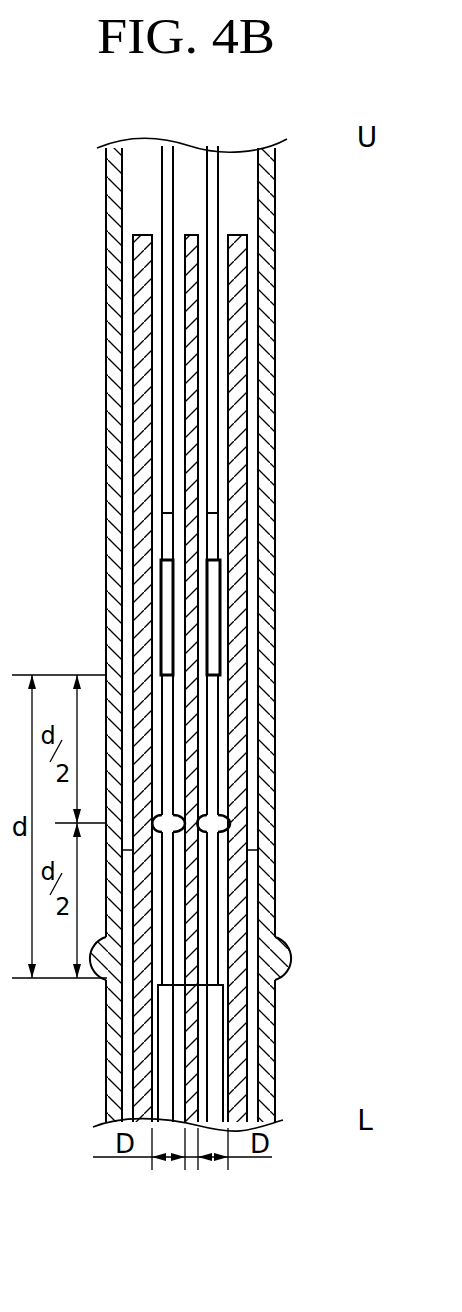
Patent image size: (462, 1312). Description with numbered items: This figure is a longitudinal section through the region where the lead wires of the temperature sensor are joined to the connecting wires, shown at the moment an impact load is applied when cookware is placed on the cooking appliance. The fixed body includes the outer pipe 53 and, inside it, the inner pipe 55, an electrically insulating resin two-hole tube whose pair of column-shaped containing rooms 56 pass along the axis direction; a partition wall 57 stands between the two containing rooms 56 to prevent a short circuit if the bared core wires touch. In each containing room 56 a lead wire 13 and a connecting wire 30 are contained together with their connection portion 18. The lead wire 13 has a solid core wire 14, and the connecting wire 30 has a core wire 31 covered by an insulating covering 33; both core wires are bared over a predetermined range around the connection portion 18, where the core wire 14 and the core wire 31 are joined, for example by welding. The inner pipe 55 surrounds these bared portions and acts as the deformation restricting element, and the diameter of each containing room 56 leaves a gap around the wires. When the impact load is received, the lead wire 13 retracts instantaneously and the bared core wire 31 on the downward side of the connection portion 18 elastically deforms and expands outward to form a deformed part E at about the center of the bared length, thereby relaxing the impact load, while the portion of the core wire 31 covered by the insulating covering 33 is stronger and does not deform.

The lead wire 13 is at (220, 182).
The core wire 14 is at (220, 527).
The connection portion 18 is at (220, 602).
The connecting wire 30 is at (223, 958).
The core wire 31 is at (222, 752).
The insulating covering 33 is at (217, 1043).
The outer pipe 53 is at (273, 261).
The inner pipe 55 is at (247, 307).
The containing room 56 is at (223, 427).
The partition wall 57 is at (197, 353).
The deformed part E is at (187, 813).